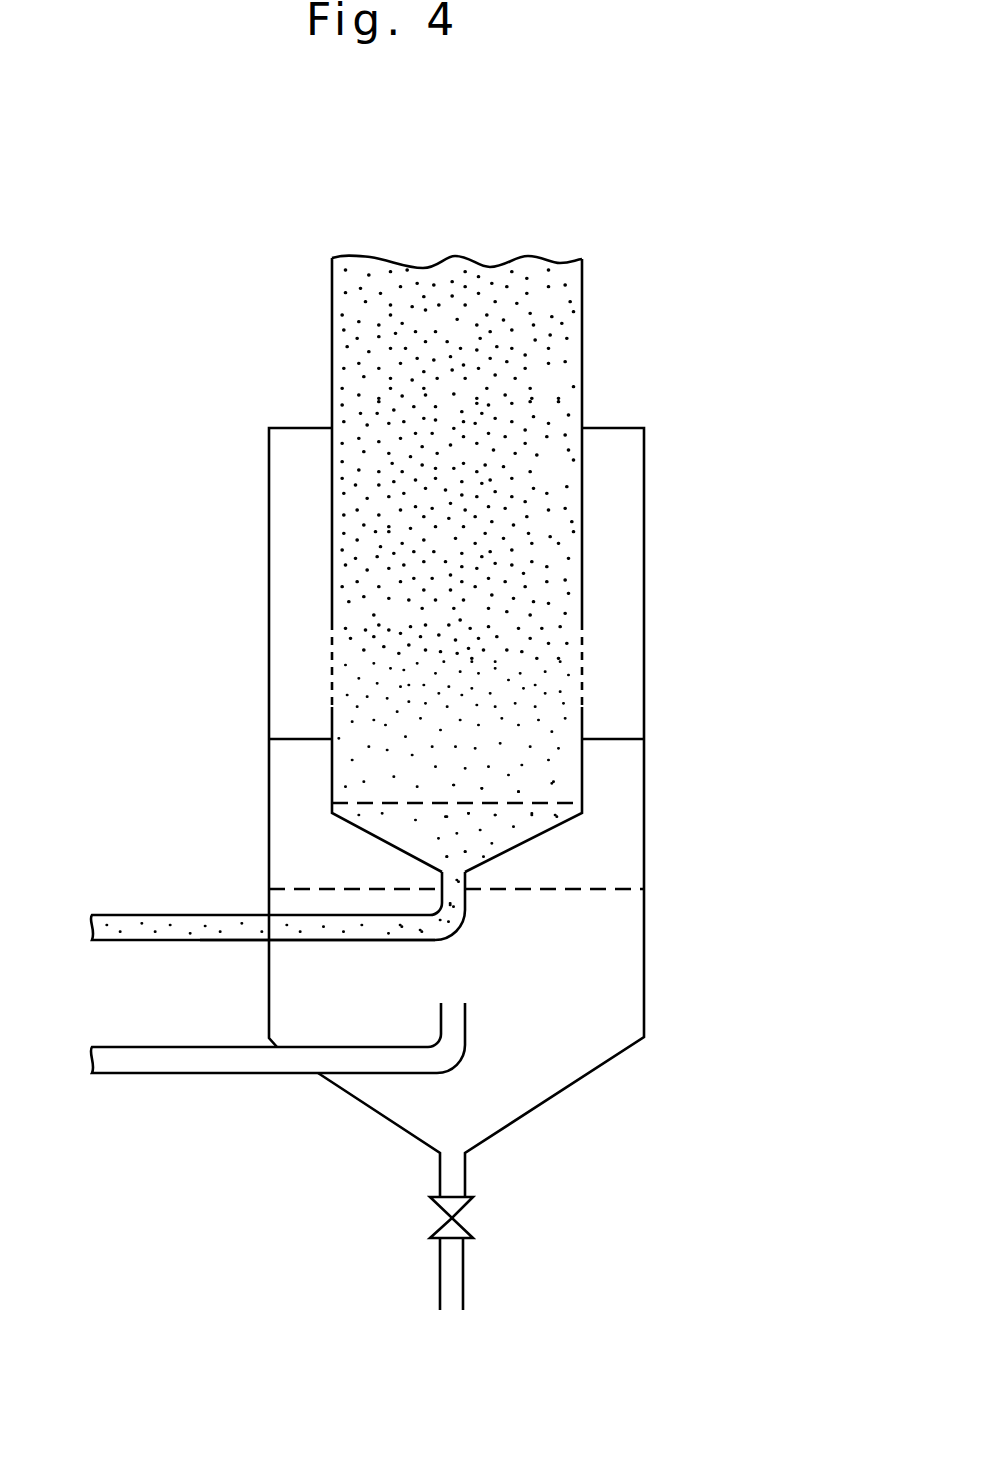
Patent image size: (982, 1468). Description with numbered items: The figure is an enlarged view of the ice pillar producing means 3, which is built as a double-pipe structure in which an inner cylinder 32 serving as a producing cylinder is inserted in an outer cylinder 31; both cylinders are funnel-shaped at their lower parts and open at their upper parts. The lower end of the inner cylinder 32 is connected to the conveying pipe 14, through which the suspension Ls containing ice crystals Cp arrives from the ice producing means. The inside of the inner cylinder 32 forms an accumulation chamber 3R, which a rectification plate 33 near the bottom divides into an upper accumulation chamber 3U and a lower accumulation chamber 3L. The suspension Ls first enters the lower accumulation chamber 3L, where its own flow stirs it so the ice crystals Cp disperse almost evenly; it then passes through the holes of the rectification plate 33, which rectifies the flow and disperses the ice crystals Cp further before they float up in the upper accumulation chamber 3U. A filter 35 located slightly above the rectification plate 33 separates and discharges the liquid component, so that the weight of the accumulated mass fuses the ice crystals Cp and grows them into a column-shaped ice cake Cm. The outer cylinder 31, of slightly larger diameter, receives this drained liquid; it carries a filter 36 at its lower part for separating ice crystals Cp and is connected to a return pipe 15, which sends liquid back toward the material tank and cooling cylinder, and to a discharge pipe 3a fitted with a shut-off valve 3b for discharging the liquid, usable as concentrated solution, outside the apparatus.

The ice pillar producing means 3 is at (218, 291).
The accumulation chamber 3R is at (455, 240).
The inner cylinder 32 is at (582, 328).
The upper accumulation chamber 3U is at (348, 378).
The ice cake Cm is at (550, 381).
The ice crystals Cp is at (547, 475).
The filter 35 is at (328, 667).
The rectification plate 33 is at (398, 804).
The lower accumulation chamber 3L is at (477, 837).
The filter 36 is at (572, 890).
The outer cylinder 31 is at (642, 1008).
The conveying pipe 14 is at (130, 913).
The suspension Ls is at (217, 928).
The return pipe 15 is at (157, 1073).
The discharge pipe 3a is at (438, 1278).
The shut-off valve 3b is at (463, 1228).